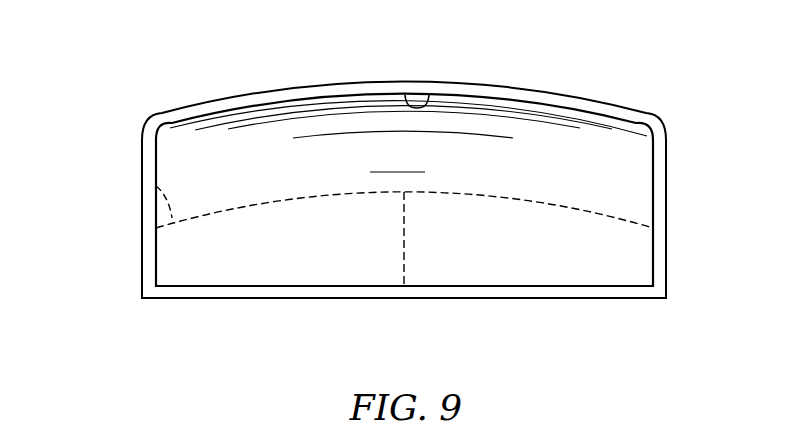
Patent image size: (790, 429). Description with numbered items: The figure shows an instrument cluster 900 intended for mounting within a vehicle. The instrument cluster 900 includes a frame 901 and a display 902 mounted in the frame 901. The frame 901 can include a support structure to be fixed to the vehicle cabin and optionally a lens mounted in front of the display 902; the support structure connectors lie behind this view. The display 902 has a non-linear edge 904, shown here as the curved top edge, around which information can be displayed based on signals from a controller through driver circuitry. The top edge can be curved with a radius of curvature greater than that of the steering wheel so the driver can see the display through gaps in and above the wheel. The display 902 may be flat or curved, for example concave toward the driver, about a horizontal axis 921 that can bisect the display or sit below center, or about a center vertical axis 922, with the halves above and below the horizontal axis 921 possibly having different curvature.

The instrument cluster 900 is at (684, 81).
The frame 901 is at (142, 289).
The display 902 is at (243, 108).
The non-linear edge 904 is at (429, 98).
The horizontal axis 921 is at (156, 186).
The center vertical axis 922 is at (404, 254).